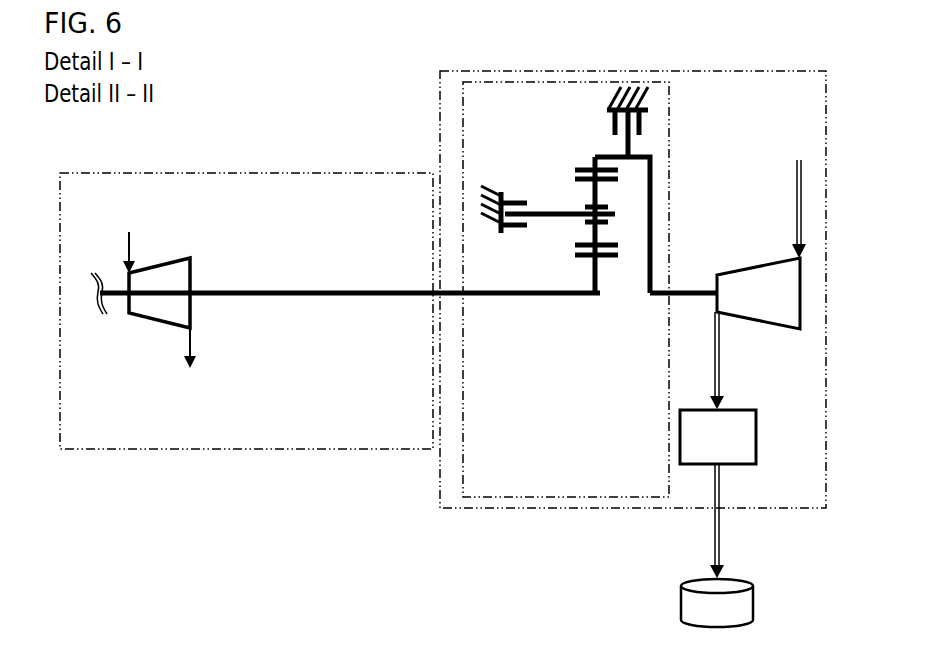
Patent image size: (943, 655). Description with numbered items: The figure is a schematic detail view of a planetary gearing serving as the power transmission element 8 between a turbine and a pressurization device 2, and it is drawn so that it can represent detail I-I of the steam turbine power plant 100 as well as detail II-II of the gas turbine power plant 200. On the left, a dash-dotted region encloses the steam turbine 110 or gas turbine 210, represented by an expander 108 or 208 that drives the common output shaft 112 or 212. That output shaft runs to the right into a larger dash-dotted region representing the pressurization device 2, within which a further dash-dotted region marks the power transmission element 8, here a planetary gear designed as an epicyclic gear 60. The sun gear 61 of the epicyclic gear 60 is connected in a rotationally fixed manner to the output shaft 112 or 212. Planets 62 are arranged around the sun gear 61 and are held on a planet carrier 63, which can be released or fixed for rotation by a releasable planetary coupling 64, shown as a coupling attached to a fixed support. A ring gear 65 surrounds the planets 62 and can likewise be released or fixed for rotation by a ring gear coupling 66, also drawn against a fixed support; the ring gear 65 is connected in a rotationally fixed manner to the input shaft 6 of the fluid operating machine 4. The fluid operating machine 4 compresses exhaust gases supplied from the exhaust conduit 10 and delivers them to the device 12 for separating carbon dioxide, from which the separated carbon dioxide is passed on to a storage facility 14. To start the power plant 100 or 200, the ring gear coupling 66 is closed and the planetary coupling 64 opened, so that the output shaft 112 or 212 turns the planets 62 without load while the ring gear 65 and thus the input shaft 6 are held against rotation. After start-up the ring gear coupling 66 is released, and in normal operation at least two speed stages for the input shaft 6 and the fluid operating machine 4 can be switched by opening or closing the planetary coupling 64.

The steam turbine power plant 100 is at (350, 85).
The gas turbine power plant 200 is at (261, 284).
The gas turbine engine 2 is at (778, 71).
The fluid operating machine 4 is at (778, 301).
The input shaft 6 is at (693, 283).
The power transmission element 8 is at (463, 483).
The exhaust conduit 10 is at (797, 212).
The device for separating carbon dioxide 12 is at (729, 446).
The storage facility 14 is at (728, 617).
The epicyclic gear 60 is at (591, 356).
The sun gear 61 is at (612, 295).
The planets 62 is at (625, 232).
The planet carrier 63 is at (564, 227).
The planetary coupling 64 is at (517, 186).
The ring gear 65 is at (660, 162).
The ring gear coupling 66 is at (598, 122).
The expander 108 is at (160, 333).
The expander 208 is at (147, 331).
The steam turbine 110 is at (216, 449).
The gas turbine 210 is at (261, 352).
The output shaft 112 is at (322, 281).
The output shaft 212 is at (281, 266).